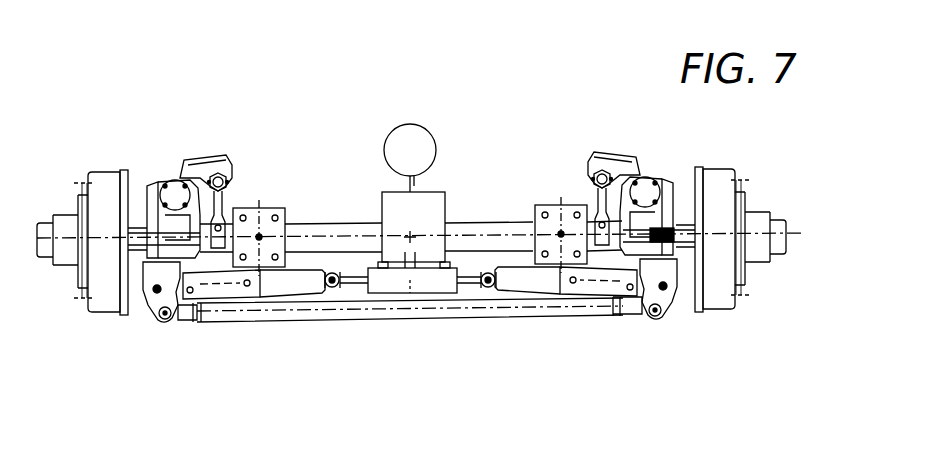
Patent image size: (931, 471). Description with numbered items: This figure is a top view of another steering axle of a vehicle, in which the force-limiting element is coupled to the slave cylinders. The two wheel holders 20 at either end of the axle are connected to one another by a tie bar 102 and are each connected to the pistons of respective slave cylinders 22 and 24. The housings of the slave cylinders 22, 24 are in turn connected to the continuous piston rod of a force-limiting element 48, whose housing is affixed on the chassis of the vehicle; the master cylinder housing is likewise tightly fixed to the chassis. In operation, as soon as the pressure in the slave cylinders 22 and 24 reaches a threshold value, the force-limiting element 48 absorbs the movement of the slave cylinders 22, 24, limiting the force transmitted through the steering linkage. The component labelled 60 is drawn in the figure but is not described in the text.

The wheel holder 20 is at (163, 222).
The slave cylinder 22 is at (227, 293).
The slave cylinder 24 is at (603, 285).
The force-limiting element 48 is at (410, 348).
The controller 60 is at (410, 133).
The tie bar 102 is at (527, 313).